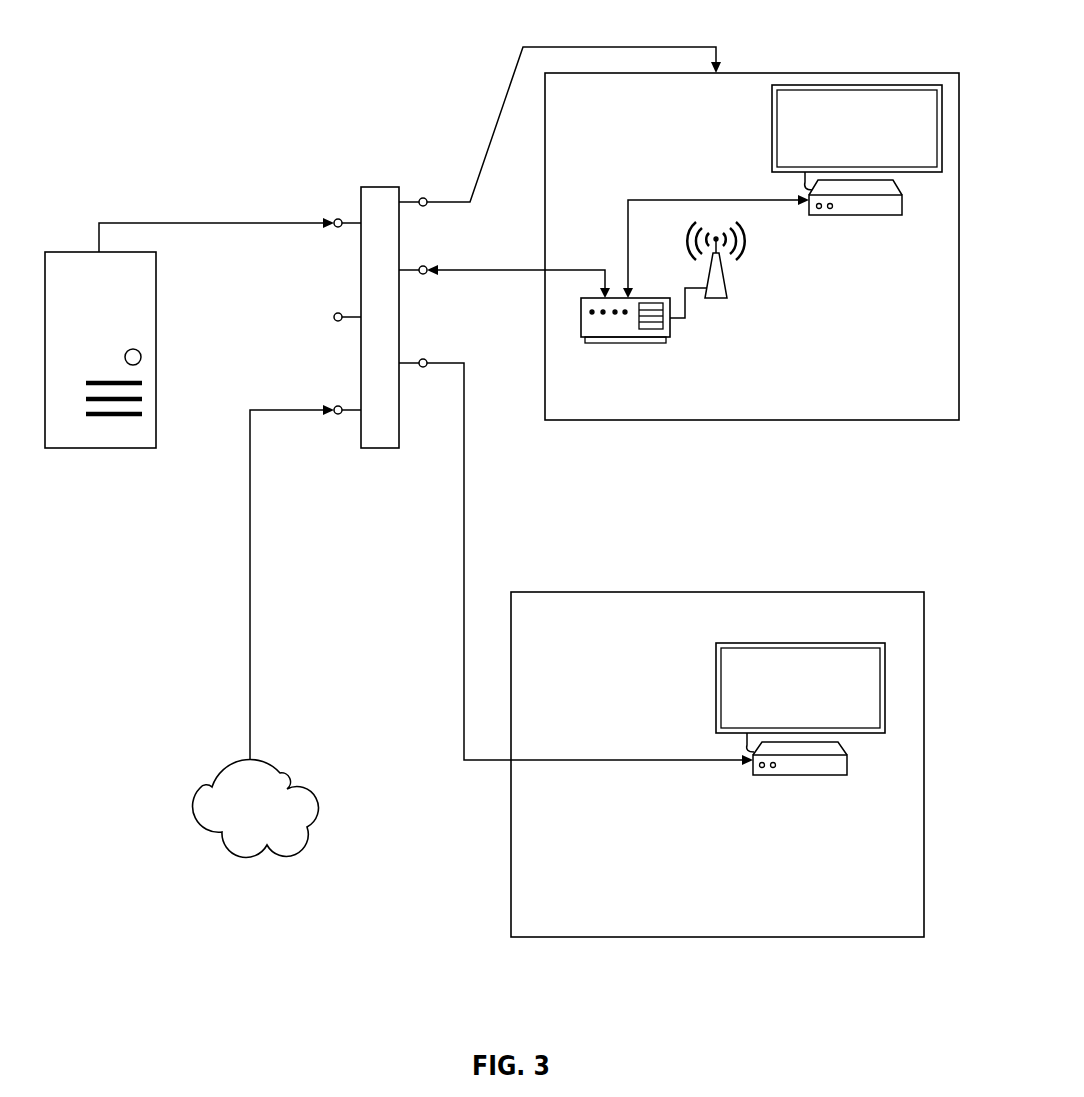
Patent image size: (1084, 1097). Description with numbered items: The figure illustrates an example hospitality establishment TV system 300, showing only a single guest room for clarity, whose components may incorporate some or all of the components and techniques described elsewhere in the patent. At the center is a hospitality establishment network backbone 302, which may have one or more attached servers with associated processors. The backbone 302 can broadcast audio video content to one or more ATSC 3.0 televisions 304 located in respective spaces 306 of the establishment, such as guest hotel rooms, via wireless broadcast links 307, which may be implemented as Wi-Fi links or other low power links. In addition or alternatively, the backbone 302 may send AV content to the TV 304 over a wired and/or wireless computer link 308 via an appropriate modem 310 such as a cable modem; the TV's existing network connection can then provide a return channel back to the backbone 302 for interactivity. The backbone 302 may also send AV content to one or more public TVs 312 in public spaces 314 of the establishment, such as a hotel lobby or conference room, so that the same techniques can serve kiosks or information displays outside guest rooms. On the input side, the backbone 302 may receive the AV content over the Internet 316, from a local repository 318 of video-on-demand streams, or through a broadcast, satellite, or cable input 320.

The system 300 is at (313, 126).
The network backbone 302 is at (378, 187).
The ATSC 3.0 television 304 is at (772, 163).
The space 306 is at (953, 415).
The wireless broadcast link 307 is at (497, 117).
The computer link 308 is at (515, 270).
The modem 310 is at (581, 332).
The public TV 312 is at (716, 690).
The public space 314 is at (918, 930).
The Internet 316 is at (293, 773).
The local repository 318 is at (156, 313).
The broadcast, satellite, or cable input 320 is at (334, 317).